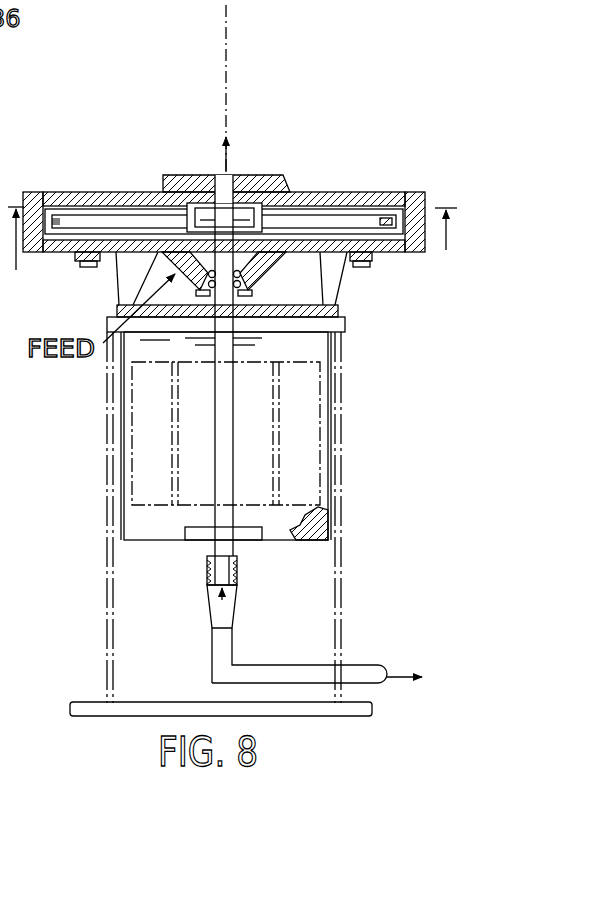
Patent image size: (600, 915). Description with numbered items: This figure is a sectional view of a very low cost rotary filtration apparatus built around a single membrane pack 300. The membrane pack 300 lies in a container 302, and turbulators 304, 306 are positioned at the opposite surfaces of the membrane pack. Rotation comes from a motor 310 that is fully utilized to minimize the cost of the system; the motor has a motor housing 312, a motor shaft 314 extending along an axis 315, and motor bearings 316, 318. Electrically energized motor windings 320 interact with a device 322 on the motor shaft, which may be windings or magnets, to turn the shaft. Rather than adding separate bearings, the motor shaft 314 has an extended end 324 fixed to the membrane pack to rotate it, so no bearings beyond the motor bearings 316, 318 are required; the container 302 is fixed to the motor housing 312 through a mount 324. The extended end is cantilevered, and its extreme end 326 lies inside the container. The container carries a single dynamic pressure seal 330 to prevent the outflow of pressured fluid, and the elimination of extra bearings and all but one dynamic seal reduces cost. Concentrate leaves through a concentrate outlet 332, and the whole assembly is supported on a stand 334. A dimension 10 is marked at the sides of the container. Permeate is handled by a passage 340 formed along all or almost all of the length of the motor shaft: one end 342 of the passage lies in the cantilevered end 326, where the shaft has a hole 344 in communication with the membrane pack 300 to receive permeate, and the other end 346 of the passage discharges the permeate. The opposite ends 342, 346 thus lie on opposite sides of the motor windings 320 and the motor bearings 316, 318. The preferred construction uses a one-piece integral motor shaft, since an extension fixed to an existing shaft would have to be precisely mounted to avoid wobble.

The gap dimension 10 is at (233, 250).
The membrane pack 300 is at (105, 218).
The container 302 is at (39, 191).
The turbulator 304 is at (78, 200).
The turbulator 306 is at (60, 253).
The motor 310 is at (334, 404).
The motor housing 312 is at (328, 525).
The motor shaft 314 is at (232, 300).
The axis 315 is at (227, 65).
The motor bearing 316 is at (185, 338).
The motor bearing 318 is at (185, 529).
The motor windings 320 is at (128, 434).
The device 322 is at (175, 462).
The extended end 324 is at (225, 305).
The extreme end 326 is at (243, 176).
The dynamic pressure seal 330 is at (245, 273).
The concentrate outlet 332 is at (222, 172).
The stand 334 is at (342, 588).
The passage 340 is at (207, 565).
The one end of the passage 342 is at (183, 200).
The hole 344 is at (230, 218).
The other end of the passage 346 is at (207, 604).